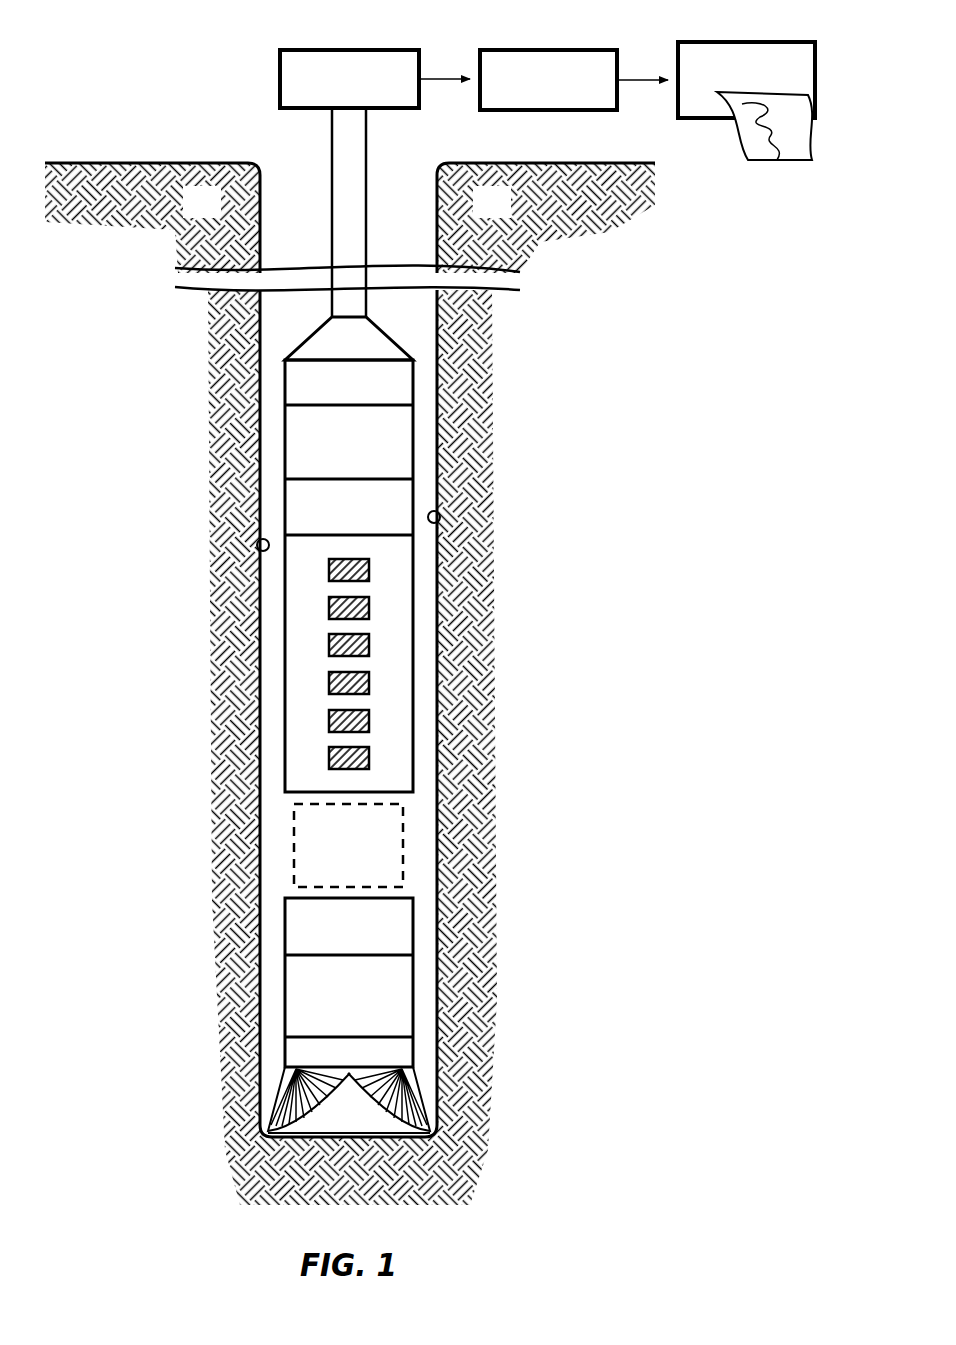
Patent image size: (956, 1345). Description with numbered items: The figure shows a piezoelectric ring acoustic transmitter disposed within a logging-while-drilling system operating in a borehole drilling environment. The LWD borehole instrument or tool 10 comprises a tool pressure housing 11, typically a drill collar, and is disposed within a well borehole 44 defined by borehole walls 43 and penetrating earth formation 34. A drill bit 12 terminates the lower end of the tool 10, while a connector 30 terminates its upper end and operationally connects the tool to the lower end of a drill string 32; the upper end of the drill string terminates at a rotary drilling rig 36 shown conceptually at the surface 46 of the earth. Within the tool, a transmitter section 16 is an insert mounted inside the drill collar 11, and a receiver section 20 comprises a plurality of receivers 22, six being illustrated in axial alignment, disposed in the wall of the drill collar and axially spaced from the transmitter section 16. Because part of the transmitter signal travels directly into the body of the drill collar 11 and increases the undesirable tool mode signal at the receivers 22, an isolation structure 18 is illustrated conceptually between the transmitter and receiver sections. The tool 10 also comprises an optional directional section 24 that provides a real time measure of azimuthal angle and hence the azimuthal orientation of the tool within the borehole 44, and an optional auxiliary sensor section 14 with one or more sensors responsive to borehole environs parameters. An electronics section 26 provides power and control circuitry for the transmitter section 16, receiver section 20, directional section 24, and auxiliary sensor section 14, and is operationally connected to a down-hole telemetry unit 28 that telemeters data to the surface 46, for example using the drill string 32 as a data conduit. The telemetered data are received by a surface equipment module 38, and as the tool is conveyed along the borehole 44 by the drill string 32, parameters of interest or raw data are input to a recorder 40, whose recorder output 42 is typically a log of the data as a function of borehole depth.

The LWD borehole instrument 10 is at (278, 595).
The tool pressure housing 11 is at (285, 927).
The drill bit 12 is at (275, 1097).
The auxiliary sensor section 14 is at (285, 995).
The transmitter section 16 is at (400, 925).
The isolation structure 18 is at (294, 847).
The receiver section 20 is at (285, 646).
The receivers 22 is at (370, 608).
The directional section 24 is at (285, 507).
The electronics section 26 is at (285, 440).
The down-hole telemetry unit 28 is at (285, 383).
The connector 30 is at (390, 340).
The drill string 32 is at (332, 160).
The earth formation 34 is at (219, 218).
The rotary drilling rig 36 is at (383, 49).
The surface equipment module 38 is at (576, 49).
The recorder 40 is at (767, 41).
The recorder output 42 is at (757, 162).
The borehole walls 43 is at (257, 548).
The well borehole 44 is at (284, 314).
The surface of the earth 46 is at (153, 162).